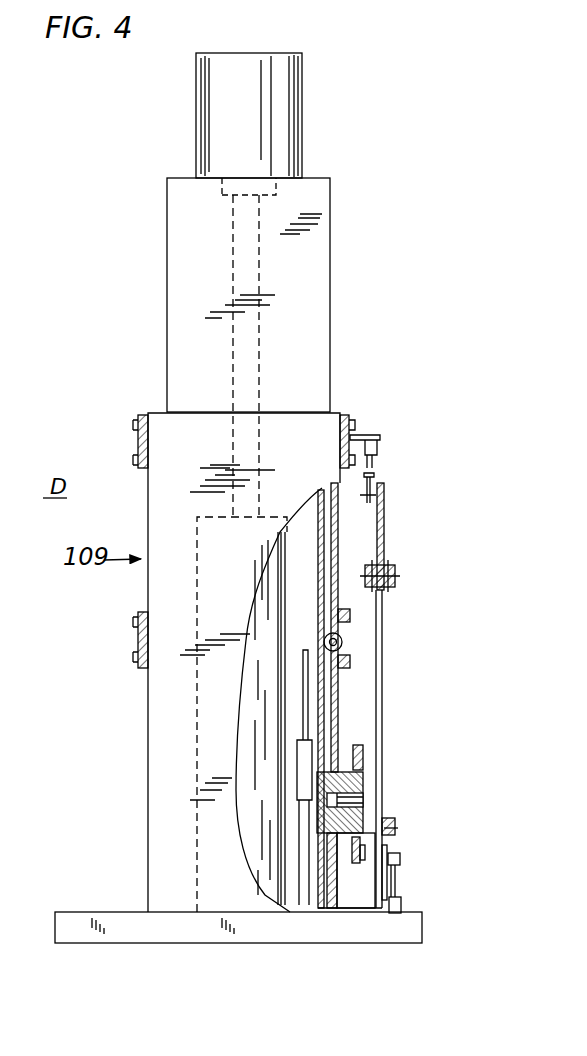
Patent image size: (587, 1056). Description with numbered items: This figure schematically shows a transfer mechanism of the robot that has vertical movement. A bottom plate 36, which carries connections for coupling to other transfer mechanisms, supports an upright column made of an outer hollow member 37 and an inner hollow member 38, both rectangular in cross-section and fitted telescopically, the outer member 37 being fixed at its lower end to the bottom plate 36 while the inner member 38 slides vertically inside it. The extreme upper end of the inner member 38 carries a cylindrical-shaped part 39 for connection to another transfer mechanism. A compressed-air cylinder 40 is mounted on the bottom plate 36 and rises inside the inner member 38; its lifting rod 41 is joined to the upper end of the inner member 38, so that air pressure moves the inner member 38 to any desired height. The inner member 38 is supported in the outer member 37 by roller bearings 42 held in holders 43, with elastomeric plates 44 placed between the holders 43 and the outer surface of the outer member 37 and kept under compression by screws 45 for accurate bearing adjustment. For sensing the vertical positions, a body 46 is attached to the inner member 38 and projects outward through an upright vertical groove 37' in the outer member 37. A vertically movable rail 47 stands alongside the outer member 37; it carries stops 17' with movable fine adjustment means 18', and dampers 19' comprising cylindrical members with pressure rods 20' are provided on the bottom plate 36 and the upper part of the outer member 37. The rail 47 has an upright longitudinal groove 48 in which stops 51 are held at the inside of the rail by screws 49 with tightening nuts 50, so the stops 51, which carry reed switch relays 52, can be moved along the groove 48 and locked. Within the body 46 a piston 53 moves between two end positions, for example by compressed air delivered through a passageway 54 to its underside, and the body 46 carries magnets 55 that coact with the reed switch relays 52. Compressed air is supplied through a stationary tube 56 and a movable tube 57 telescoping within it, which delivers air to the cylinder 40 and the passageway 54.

The bottom plate 36 is at (93, 916).
The outer hollow member 37 is at (264, 662).
The upright vertical groove 37' is at (353, 695).
The inner hollow member 38 is at (167, 291).
The cylindrical-shaped part 39 is at (266, 82).
The cylinder 40 is at (197, 715).
The lifting rod 41 is at (259, 265).
The roller bearings 42 is at (326, 641).
The holders 43 is at (377, 450).
The plates 44 is at (343, 414).
The screws 45 is at (356, 423).
The body 46 is at (364, 800).
The vertically movable rail 47 is at (378, 483).
The upright longitudinally extending groove 48 is at (384, 700).
The screws 49 is at (388, 852).
The tightening nuts 50 is at (399, 862).
The stops 51 is at (396, 810).
The reed switch relays 52 is at (401, 903).
The piston 53 is at (385, 818).
The passageway 54 is at (364, 778).
The magnets 55 is at (364, 752).
The stationary tube 56 is at (296, 810).
The movable tube 57 is at (303, 688).
The stops 17' is at (390, 686).
The fine adjustment means 18' is at (390, 680).
The dampers 19' is at (427, 688).
The pressure rods 20' is at (398, 714).